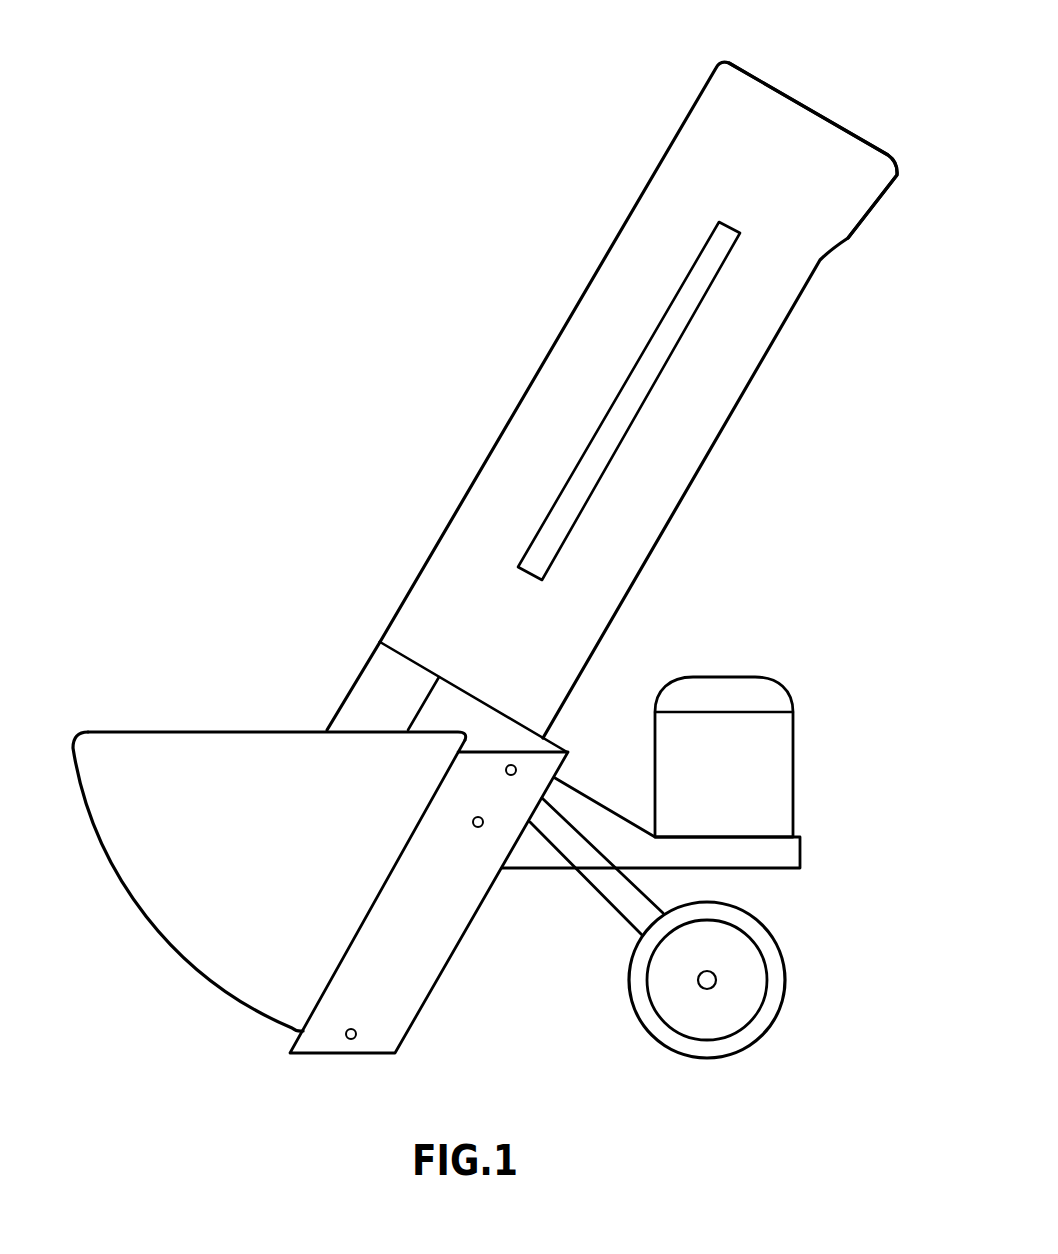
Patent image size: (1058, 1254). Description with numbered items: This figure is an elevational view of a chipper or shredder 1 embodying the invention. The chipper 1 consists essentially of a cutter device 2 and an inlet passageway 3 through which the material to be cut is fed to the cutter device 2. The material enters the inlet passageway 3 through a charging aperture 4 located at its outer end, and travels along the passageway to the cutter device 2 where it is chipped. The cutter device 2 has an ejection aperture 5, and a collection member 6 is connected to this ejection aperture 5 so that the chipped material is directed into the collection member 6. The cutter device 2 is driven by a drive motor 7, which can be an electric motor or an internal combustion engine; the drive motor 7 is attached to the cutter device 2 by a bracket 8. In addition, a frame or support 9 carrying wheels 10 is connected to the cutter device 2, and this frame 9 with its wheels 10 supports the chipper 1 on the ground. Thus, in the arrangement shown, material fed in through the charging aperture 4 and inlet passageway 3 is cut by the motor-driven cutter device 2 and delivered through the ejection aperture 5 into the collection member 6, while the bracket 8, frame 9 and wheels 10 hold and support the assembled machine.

The chipper or shredder 1 is at (460, 397).
The cutter device 2 is at (365, 680).
The inlet passageway 3 is at (642, 208).
The charging aperture 4 is at (795, 84).
The ejection aperture 5 is at (363, 736).
The collection member 6 is at (221, 956).
The drive motor 7 is at (775, 753).
The bracket 8 is at (786, 856).
The frame or support 9 is at (388, 1028).
The wheels 10 is at (663, 988).